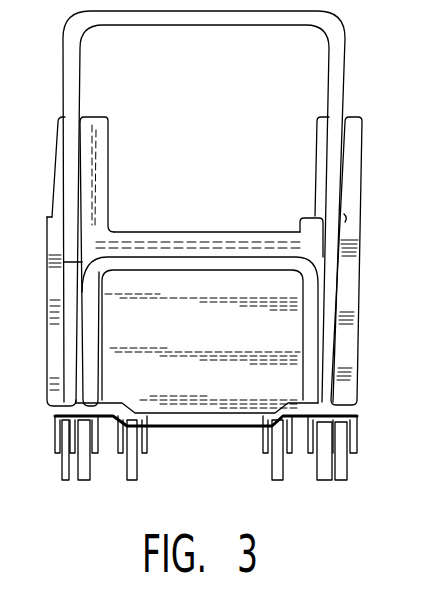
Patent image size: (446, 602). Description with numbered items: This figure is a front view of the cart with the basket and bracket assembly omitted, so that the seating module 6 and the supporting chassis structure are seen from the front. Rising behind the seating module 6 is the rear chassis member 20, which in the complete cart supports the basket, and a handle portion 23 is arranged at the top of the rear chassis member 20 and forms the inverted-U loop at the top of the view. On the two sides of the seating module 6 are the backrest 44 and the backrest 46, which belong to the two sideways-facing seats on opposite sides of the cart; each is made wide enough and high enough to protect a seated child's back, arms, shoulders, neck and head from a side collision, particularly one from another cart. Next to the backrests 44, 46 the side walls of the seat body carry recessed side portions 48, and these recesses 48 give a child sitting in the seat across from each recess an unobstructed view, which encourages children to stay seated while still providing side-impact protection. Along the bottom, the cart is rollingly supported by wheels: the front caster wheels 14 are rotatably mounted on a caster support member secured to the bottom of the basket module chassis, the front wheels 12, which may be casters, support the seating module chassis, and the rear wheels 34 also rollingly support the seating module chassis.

The seating module 6 is at (380, 150).
The handle portion 23 is at (215, 26).
The backrest 44 is at (85, 117).
The backrest 46 is at (347, 118).
The recessed side portion 48 is at (348, 218).
The rear chassis member 20 is at (340, 294).
The front caster wheels 14 is at (125, 472).
The front wheels 12 is at (323, 480).
The rear wheels 34 is at (347, 468).